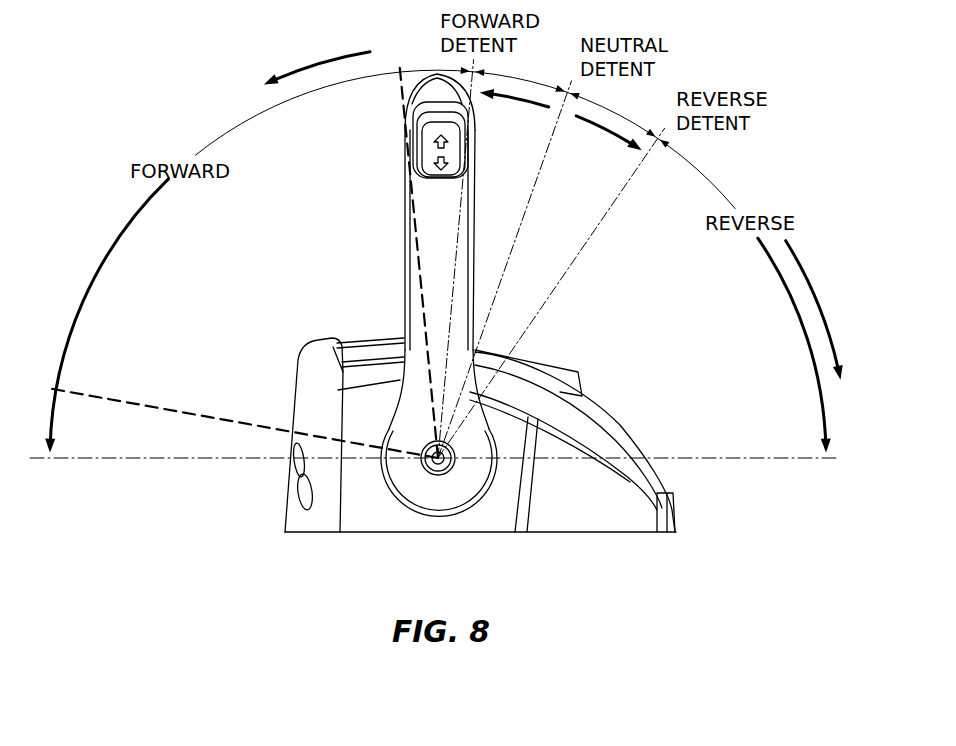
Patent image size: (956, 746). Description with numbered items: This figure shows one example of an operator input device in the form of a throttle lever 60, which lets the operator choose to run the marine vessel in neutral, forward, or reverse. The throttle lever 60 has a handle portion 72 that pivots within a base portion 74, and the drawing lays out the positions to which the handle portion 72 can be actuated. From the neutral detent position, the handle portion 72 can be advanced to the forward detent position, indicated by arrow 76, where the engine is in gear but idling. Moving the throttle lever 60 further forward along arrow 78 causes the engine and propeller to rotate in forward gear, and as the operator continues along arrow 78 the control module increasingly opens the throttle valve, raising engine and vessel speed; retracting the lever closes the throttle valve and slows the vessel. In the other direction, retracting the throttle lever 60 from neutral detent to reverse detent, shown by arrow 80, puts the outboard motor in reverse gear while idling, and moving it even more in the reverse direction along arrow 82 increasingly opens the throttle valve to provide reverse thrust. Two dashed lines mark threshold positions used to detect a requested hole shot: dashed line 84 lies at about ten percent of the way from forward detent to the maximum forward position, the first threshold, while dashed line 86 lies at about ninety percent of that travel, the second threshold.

The throttle lever 60 is at (233, 507).
The handle portion 72 is at (405, 244).
The base portion 74 is at (585, 512).
The arrow 76 is at (517, 99).
The arrow 78 is at (300, 70).
The arrow 80 is at (604, 129).
The arrow 82 is at (813, 292).
The dashed line 84 is at (423, 308).
The dashed line 86 is at (188, 412).